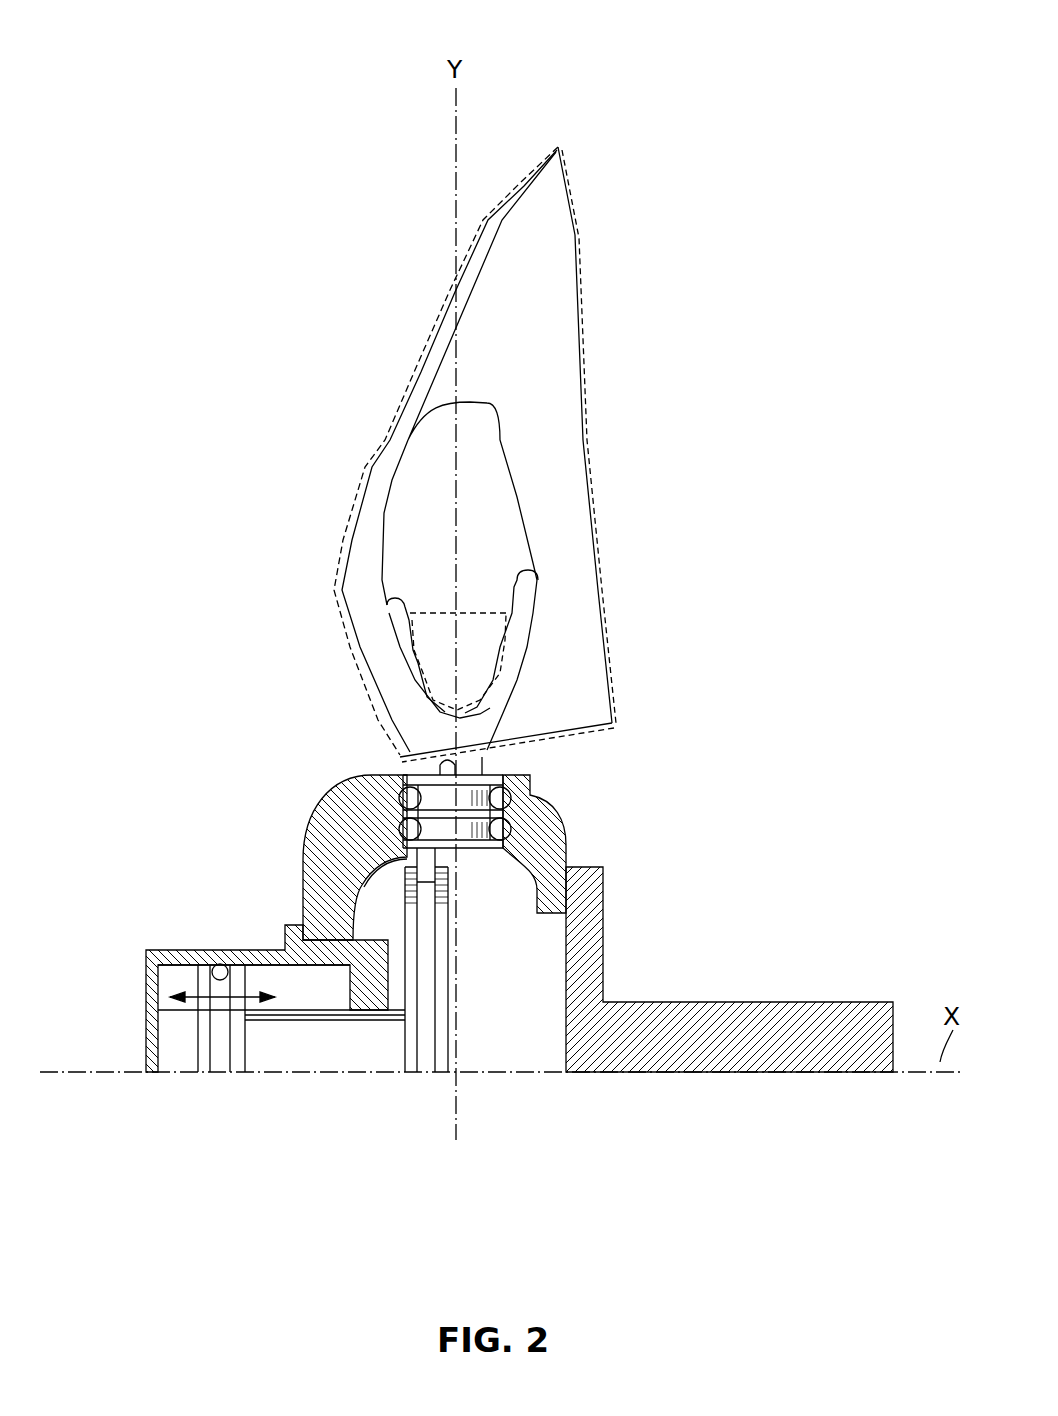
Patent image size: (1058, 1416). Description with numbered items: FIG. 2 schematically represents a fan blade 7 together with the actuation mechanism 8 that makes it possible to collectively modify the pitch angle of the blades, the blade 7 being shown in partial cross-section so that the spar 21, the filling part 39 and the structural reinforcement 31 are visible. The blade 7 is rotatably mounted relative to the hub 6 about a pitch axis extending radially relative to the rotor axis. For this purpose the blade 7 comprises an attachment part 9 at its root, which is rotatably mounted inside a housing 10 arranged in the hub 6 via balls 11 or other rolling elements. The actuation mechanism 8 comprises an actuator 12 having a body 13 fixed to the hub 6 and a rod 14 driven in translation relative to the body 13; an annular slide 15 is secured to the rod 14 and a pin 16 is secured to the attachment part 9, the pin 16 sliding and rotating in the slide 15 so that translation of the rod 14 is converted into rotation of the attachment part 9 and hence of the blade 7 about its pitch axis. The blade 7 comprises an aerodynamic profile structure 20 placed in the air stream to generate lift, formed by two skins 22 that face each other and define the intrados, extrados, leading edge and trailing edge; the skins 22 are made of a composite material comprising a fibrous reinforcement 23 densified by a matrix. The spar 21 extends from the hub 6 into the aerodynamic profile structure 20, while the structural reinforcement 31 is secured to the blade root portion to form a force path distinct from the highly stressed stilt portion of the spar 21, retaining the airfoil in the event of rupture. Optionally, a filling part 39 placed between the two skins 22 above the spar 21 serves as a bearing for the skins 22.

The hub 6 is at (328, 812).
The blade 7 is at (610, 108).
The actuation mechanism 8 is at (163, 870).
The attachment part 9 is at (473, 840).
The housing 10 is at (503, 860).
The balls 11 is at (506, 820).
The actuator 12 is at (148, 1010).
The body 13 is at (218, 965).
The rod 14 is at (310, 1062).
The annular slide 15 is at (425, 1058).
The pin 16 is at (342, 848).
The aerodynamic profile structure 20 is at (445, 278).
The spar 21 is at (532, 630).
The skins 22 is at (432, 405).
The fibrous reinforcement 23 is at (518, 397).
The structural reinforcement 31 is at (463, 698).
The filling part 39 is at (427, 495).